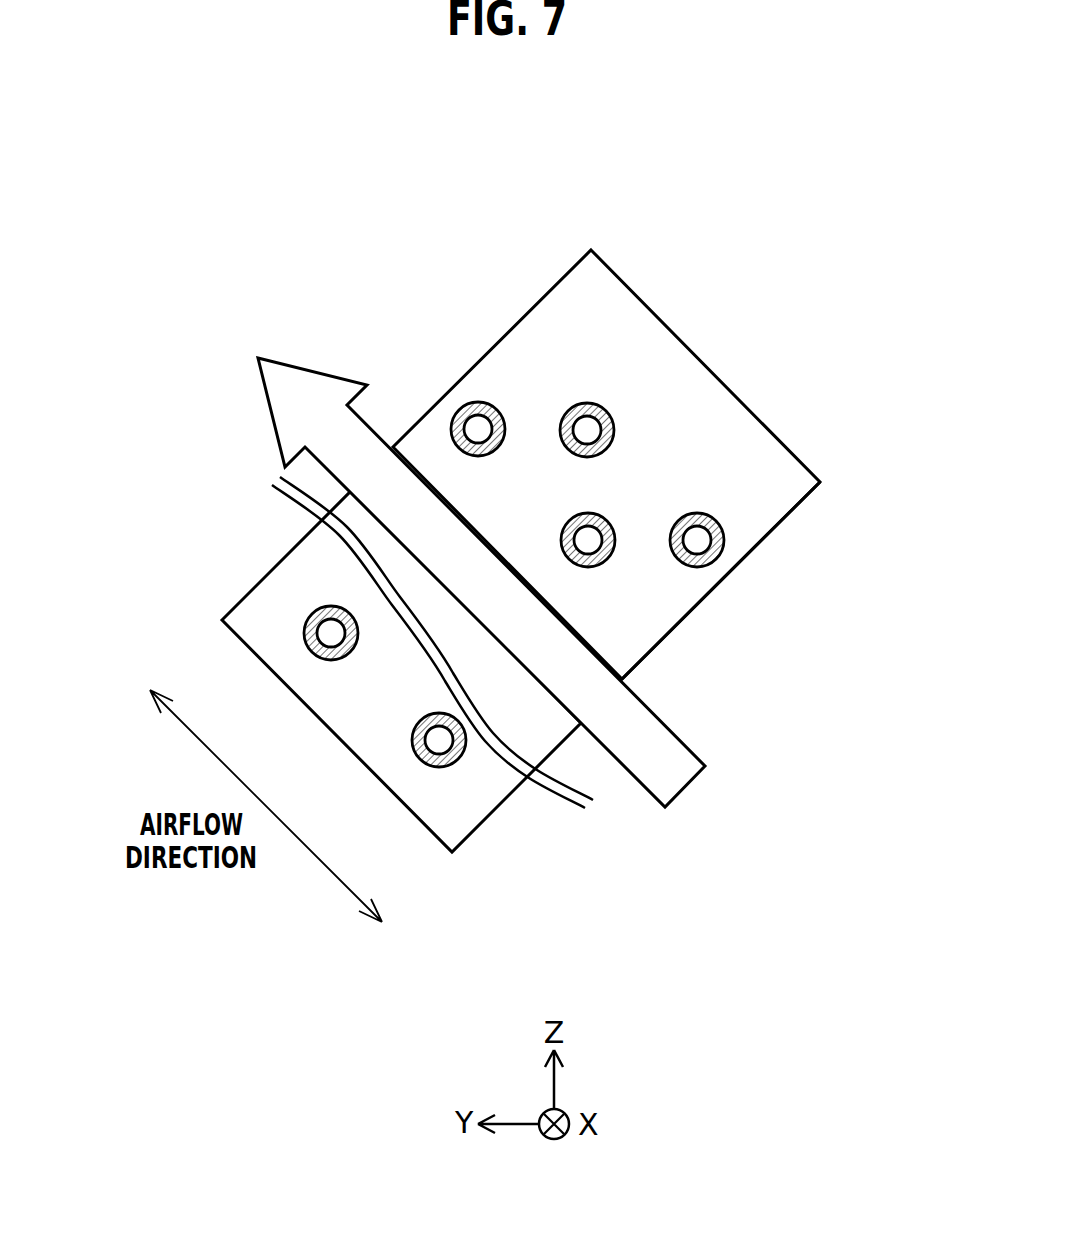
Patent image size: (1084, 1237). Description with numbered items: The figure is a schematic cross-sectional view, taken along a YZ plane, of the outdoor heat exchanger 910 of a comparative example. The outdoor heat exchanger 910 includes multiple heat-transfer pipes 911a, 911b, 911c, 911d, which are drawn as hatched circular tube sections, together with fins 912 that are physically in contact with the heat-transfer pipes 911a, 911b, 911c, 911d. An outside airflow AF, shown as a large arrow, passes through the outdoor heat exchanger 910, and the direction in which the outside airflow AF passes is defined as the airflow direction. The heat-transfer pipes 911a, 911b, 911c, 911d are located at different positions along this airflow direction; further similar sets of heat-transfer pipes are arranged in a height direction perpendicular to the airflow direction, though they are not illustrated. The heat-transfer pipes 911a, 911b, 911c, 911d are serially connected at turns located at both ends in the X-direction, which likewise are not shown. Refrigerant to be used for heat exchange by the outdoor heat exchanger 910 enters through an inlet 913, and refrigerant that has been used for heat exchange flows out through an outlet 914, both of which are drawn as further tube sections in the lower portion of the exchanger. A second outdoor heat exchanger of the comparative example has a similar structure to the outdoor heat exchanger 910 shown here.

The outdoor heat exchanger 910 is at (747, 339).
The heat-transfer pipe 911a is at (488, 455).
The heat-transfer pipe 911b is at (598, 456).
The heat-transfer pipe 911c is at (594, 567).
The heat-transfer pipe 911d is at (718, 558).
The fins 912 is at (805, 490).
The inlet 913 is at (344, 659).
The outlet 914 is at (450, 766).
The outside airflow AF is at (690, 745).